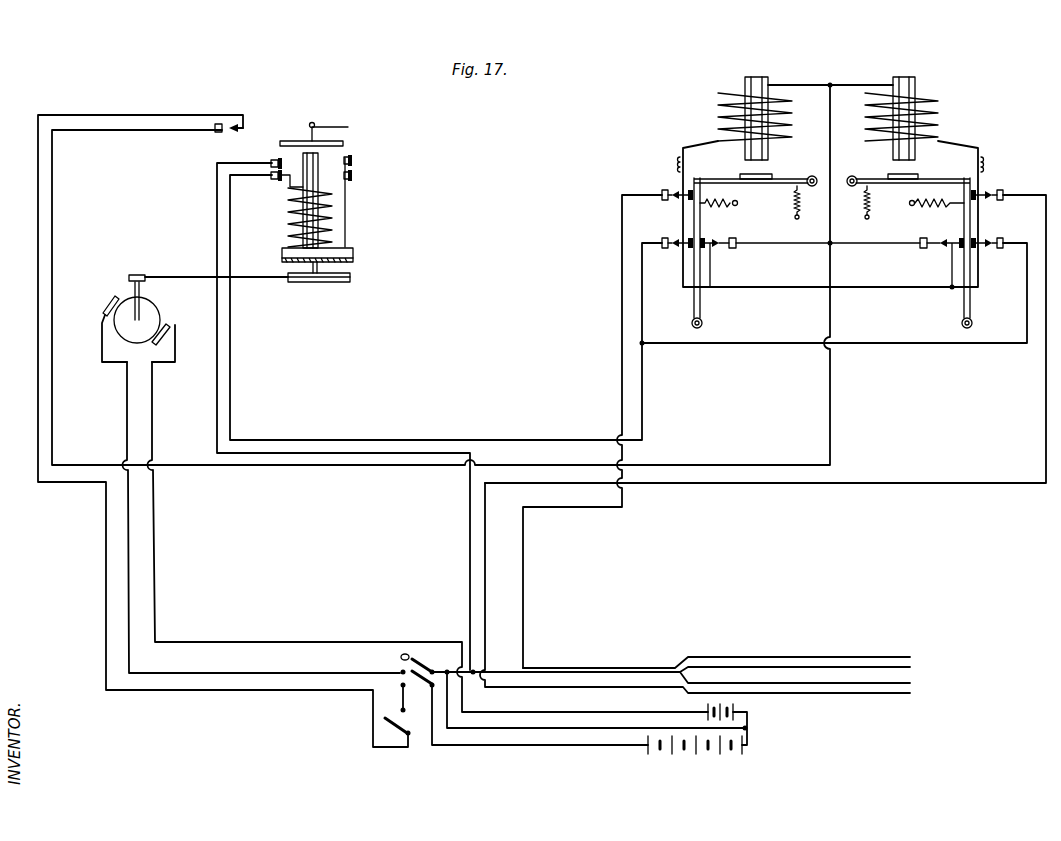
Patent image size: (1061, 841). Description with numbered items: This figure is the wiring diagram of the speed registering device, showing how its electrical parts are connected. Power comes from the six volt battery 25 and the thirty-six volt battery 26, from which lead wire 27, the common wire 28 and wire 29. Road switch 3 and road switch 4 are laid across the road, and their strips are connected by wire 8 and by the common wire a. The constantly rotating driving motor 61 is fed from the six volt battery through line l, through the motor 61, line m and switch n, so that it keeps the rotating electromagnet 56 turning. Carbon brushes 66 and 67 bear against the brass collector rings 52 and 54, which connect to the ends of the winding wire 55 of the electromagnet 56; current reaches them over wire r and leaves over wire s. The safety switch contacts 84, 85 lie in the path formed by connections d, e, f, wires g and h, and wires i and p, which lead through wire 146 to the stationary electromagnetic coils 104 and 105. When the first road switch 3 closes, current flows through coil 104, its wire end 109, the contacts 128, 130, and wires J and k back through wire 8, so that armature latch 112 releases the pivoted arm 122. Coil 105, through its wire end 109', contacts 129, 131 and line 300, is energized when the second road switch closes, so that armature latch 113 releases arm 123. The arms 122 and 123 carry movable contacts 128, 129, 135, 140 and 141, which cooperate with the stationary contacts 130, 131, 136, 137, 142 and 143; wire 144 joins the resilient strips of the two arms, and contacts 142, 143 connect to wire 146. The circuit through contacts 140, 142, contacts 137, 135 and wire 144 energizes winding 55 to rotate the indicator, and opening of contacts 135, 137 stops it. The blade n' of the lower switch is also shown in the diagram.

The road switch 3 is at (927, 664).
The road switch 4 is at (927, 693).
The wire 8 is at (625, 667).
The battery 25 is at (742, 710).
The battery 26 is at (714, 760).
The wire 27 is at (640, 712).
The wire 28 is at (548, 727).
The wire 29 is at (568, 750).
The brass disk 52 is at (353, 160).
The brass disk 54 is at (353, 176).
The winding wire 55 is at (334, 219).
The electromagnet 56 is at (289, 221).
The driving motor 61 is at (152, 312).
The carbon brush 66 is at (268, 160).
The carbon brush 67 is at (270, 178).
The contact 84 is at (228, 134).
The stationary contact 85 is at (213, 133).
The electromagnetic coil 104 is at (755, 72).
The electromagnetic coil 105 is at (925, 64).
The wire end 109 is at (823, 200).
The wire end 109' is at (973, 129).
The armature latch 112 is at (762, 184).
The armature latch 113 is at (888, 184).
The upstanding arm 122 is at (694, 306).
The upstanding arm 123 is at (970, 306).
The contact member 128 is at (677, 160).
The contact member 129 is at (984, 172).
The stationary contact 130 is at (662, 190).
The stationary contact 131 is at (1003, 191).
The contact member 135 is at (992, 250).
The stationary contact member 136 is at (664, 238).
The stationary contact member 137 is at (1001, 238).
The movable contact member 140 is at (718, 248).
The movable contact member 141 is at (947, 250).
The stationary contact 142 is at (738, 245).
The stationary contact 143 is at (923, 249).
The wire 144 is at (745, 290).
The wire 146 is at (831, 150).
The line 300 is at (970, 485).
The common wire a is at (560, 673).
The connection d is at (406, 686).
The connection e is at (406, 711).
The connection f is at (408, 736).
The wire g is at (391, 749).
The wire h is at (36, 328).
The wire i is at (832, 400).
The wire J is at (620, 255).
The wire k is at (524, 570).
The line l is at (153, 393).
The line m is at (126, 393).
The switch n is at (418, 663).
The switch n' is at (391, 712).
The wire p is at (834, 322).
The wire r is at (216, 419).
The wire s is at (232, 419).